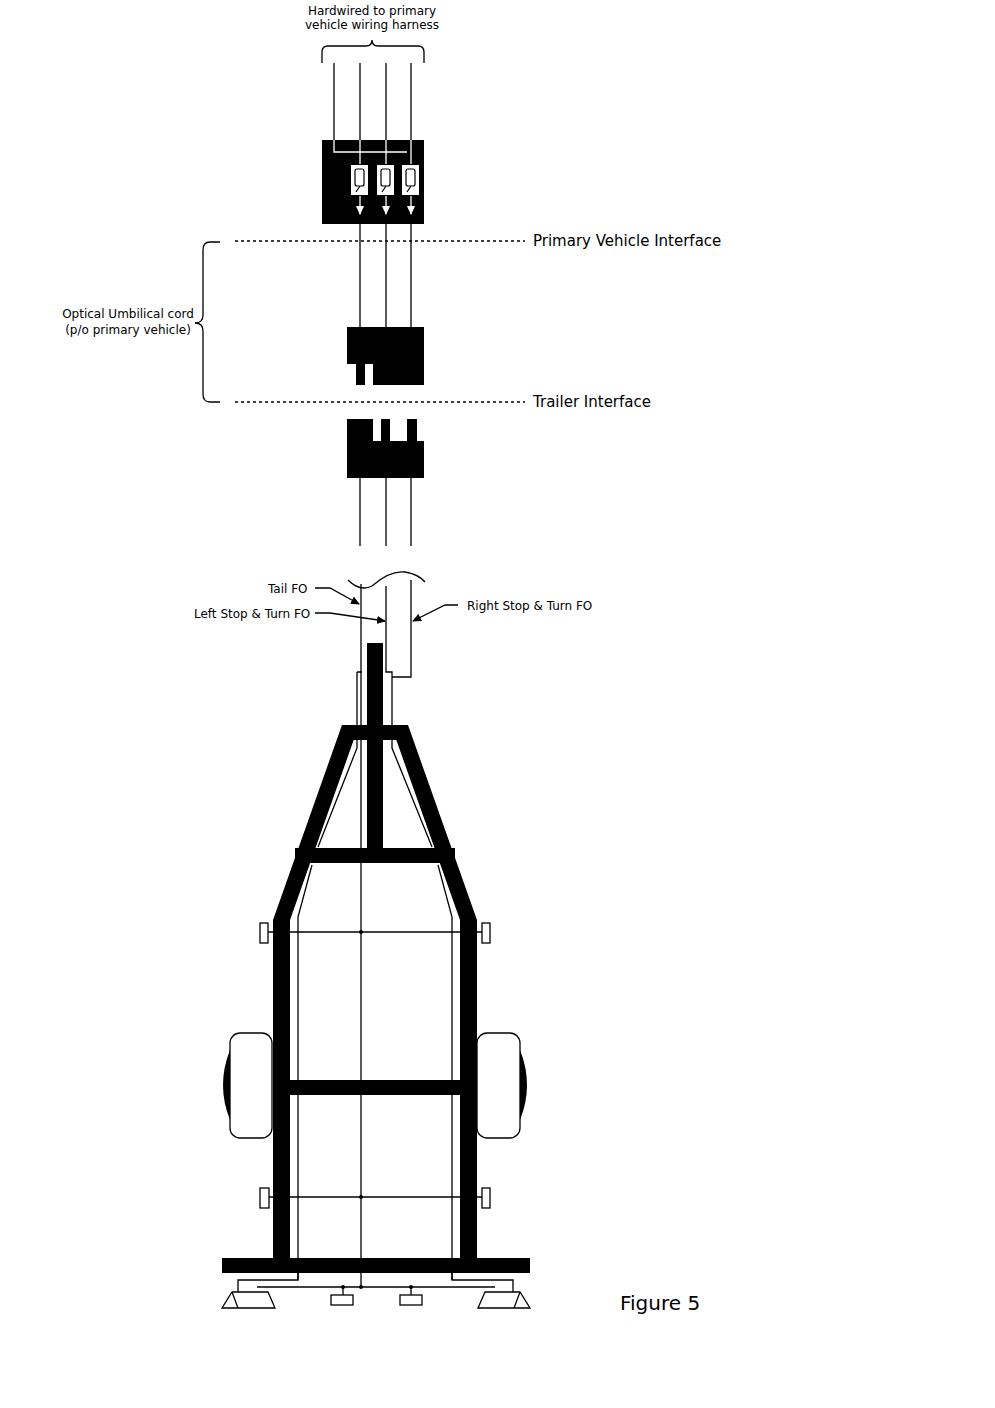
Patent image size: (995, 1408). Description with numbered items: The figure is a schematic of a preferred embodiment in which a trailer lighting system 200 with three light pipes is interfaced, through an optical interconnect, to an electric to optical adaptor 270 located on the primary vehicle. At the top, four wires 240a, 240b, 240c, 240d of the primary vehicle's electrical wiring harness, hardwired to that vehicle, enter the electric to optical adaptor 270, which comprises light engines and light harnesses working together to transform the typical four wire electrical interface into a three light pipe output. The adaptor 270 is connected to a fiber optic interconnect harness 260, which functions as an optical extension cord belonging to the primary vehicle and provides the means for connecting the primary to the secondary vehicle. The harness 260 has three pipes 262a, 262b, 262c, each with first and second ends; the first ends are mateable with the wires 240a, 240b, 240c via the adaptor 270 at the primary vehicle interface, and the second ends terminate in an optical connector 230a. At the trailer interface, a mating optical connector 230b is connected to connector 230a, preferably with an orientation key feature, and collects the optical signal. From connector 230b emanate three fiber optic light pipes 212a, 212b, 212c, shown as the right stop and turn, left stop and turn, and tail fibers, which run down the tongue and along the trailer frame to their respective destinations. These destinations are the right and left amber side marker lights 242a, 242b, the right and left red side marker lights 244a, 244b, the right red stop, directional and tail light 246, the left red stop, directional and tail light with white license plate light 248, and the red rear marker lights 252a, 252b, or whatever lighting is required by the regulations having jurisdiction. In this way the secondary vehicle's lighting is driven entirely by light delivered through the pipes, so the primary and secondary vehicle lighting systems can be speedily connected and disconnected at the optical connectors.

The trailer 200 is at (595, 555).
The fiber optic light pipe 212a is at (413, 535).
The fiber optic light pipe 212b is at (388, 519).
The fiber optic light pipe 212c is at (359, 535).
The optical connector 230a is at (416, 356).
The optical connector 230b is at (416, 448).
The electrical wire 240a is at (413, 129).
The electrical wire 240b is at (389, 102).
The electrical wire 240c is at (357, 102).
The electrical wire 240d is at (332, 129).
The amber side marker light 242a is at (449, 933).
The amber side marker light 242b is at (288, 933).
The red side marker light 244a is at (449, 1198).
The red side marker light 244b is at (288, 1198).
The red stop/directional and tail light 246 is at (504, 1310).
The red stop/directional and tail light with white license plate light 248 is at (248, 1314).
The red rear marker light 252a is at (365, 1310).
The red rear marker light 252b is at (411, 1295).
The fiber optic interconnect harness 260 is at (427, 304).
The light pipe 262a is at (413, 306).
The light pipe 262b is at (388, 291).
The light pipe 262c is at (359, 306).
The electric to optical adaptor 270 is at (399, 182).